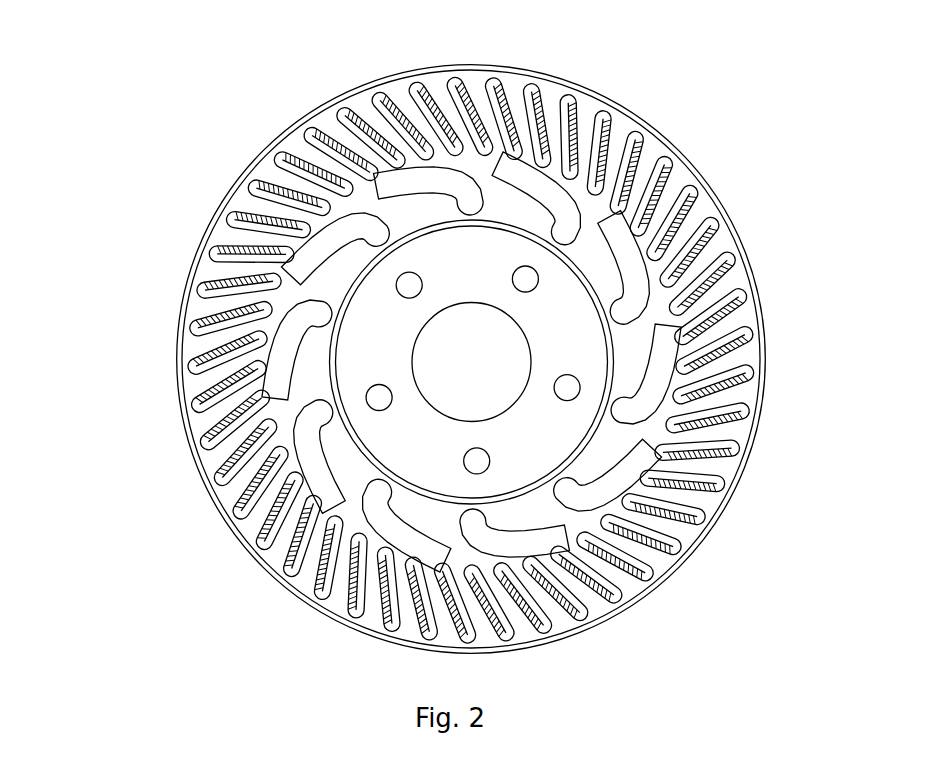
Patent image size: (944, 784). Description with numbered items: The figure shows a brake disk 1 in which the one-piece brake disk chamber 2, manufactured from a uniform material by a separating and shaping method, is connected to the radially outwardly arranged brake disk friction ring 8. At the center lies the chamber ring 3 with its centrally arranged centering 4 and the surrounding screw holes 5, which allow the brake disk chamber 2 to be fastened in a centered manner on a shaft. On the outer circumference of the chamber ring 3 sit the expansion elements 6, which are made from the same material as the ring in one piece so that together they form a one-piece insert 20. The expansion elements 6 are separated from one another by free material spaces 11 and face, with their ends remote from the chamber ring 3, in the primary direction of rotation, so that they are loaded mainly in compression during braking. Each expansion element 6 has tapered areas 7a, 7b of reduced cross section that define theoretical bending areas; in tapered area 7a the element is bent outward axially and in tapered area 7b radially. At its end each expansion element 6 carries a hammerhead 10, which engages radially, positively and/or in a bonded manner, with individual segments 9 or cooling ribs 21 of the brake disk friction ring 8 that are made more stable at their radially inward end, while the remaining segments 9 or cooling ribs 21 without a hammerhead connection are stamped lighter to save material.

The brake disk 1 is at (481, 359).
The brake disk chamber 2 is at (450, 250).
The chamber ring 3 is at (565, 328).
The centering 4 is at (487, 372).
The screw holes 5 is at (477, 458).
The expansion elements 6 is at (523, 513).
The tapered area 7a is at (487, 173).
The tapered area 7b is at (525, 210).
The brake disk friction ring 8 is at (222, 544).
The segments 9 is at (157, 420).
The hammerhead 10 is at (307, 233).
The free material spaces 11 is at (323, 293).
The insert 20 is at (405, 485).
The cooling ribs 21 is at (217, 427).